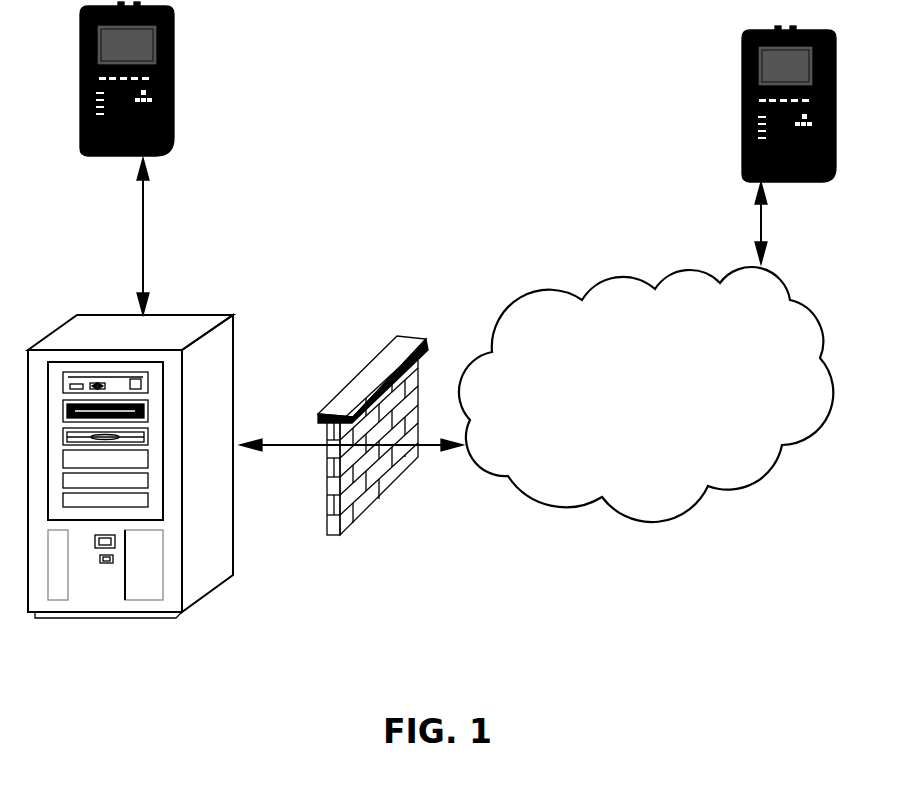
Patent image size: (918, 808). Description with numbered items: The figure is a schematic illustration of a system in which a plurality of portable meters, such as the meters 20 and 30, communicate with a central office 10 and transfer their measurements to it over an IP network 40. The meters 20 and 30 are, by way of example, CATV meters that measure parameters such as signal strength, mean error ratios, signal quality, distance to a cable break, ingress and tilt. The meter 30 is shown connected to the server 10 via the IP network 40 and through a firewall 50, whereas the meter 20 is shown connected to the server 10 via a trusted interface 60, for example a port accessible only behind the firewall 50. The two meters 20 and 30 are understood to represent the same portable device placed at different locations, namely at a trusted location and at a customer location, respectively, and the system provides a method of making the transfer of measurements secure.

The central office 10 is at (212, 597).
The meter 20 is at (171, 112).
The meter 30 is at (788, 182).
The IP network 40 is at (725, 488).
The firewall 50 is at (382, 500).
The trusted interface 60 is at (145, 235).